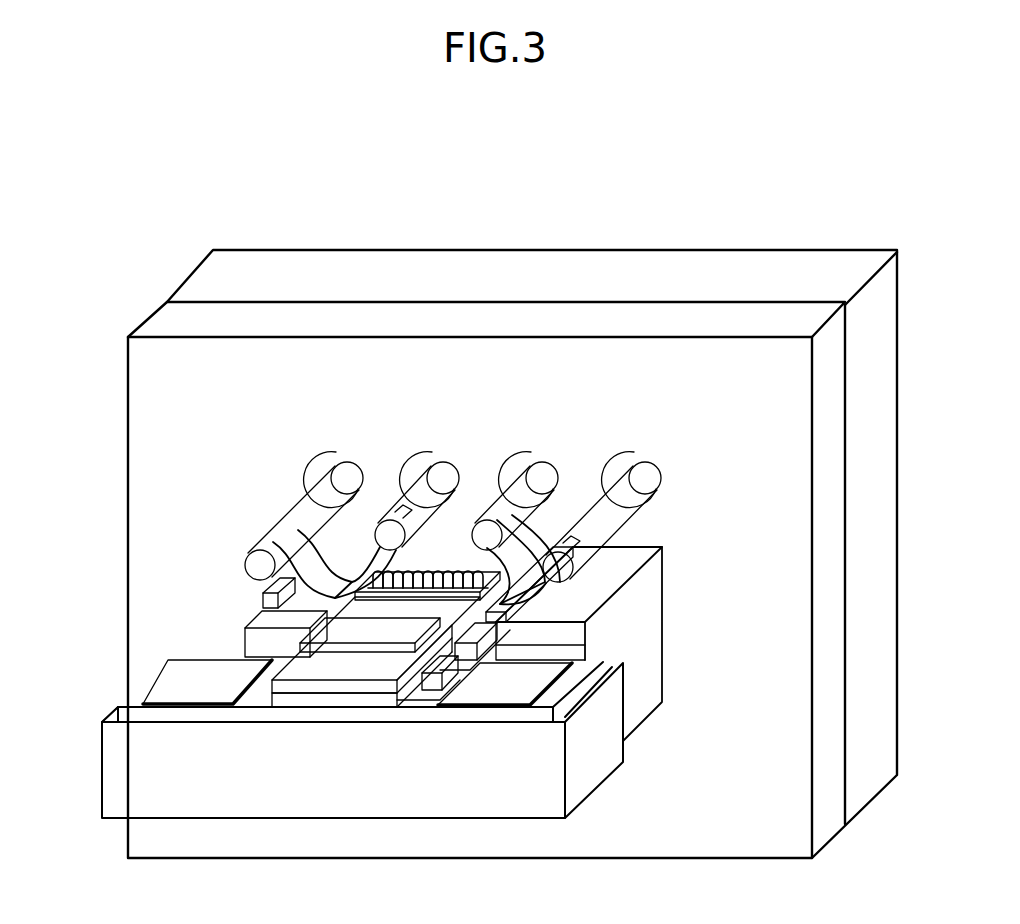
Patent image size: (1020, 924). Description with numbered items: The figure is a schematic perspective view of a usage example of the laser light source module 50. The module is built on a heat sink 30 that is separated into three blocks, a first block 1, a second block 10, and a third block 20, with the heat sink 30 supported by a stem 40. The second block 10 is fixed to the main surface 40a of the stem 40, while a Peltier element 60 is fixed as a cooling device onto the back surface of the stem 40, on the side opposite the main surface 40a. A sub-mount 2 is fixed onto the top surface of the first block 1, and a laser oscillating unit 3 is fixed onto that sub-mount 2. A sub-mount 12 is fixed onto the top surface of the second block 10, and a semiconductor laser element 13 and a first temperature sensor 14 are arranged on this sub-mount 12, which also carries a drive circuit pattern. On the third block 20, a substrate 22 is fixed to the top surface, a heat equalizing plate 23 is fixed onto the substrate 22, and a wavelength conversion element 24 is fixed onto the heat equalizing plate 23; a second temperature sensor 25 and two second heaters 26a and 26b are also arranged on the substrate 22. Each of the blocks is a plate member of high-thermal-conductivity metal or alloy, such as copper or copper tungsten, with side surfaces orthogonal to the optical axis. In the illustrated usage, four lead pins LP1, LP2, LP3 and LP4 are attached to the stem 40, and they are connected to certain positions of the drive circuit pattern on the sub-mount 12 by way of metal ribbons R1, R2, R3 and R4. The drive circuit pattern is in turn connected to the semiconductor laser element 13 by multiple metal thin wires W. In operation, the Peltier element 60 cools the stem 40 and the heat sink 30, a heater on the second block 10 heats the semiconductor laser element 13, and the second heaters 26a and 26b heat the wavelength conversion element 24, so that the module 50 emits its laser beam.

The Peltier element 60 is at (672, 264).
The stem 40 is at (822, 812).
The main surface 40a is at (655, 836).
The third block 20 is at (112, 795).
The substrate 22 is at (255, 712).
The heat sink 30 is at (98, 709).
The second heater 26b is at (176, 698).
The second heater 26a is at (498, 697).
The first temperature sensor 14 is at (258, 601).
The heat equalizing plate 23 is at (322, 697).
The wavelength conversion element 24 is at (385, 688).
The laser oscillating unit 3 is at (384, 614).
The semiconductor laser element 13 is at (450, 596).
The metal thin wires W is at (437, 568).
The second temperature sensor 25 is at (432, 686).
The sub-mount 2 is at (485, 640).
The second block 10 is at (638, 642).
The first block 1 is at (562, 645).
The sub-mount 12 is at (643, 558).
The lead pin LP1 is at (325, 472).
The lead pin LP2 is at (443, 455).
The lead pin LP3 is at (542, 457).
The lead pin LP4 is at (658, 468).
The metal ribbon R1 is at (280, 534).
The metal ribbon R2 is at (405, 505).
The metal ribbon R3 is at (502, 505).
The metal ribbon R4 is at (575, 525).
The laser light source module 50 is at (314, 412).